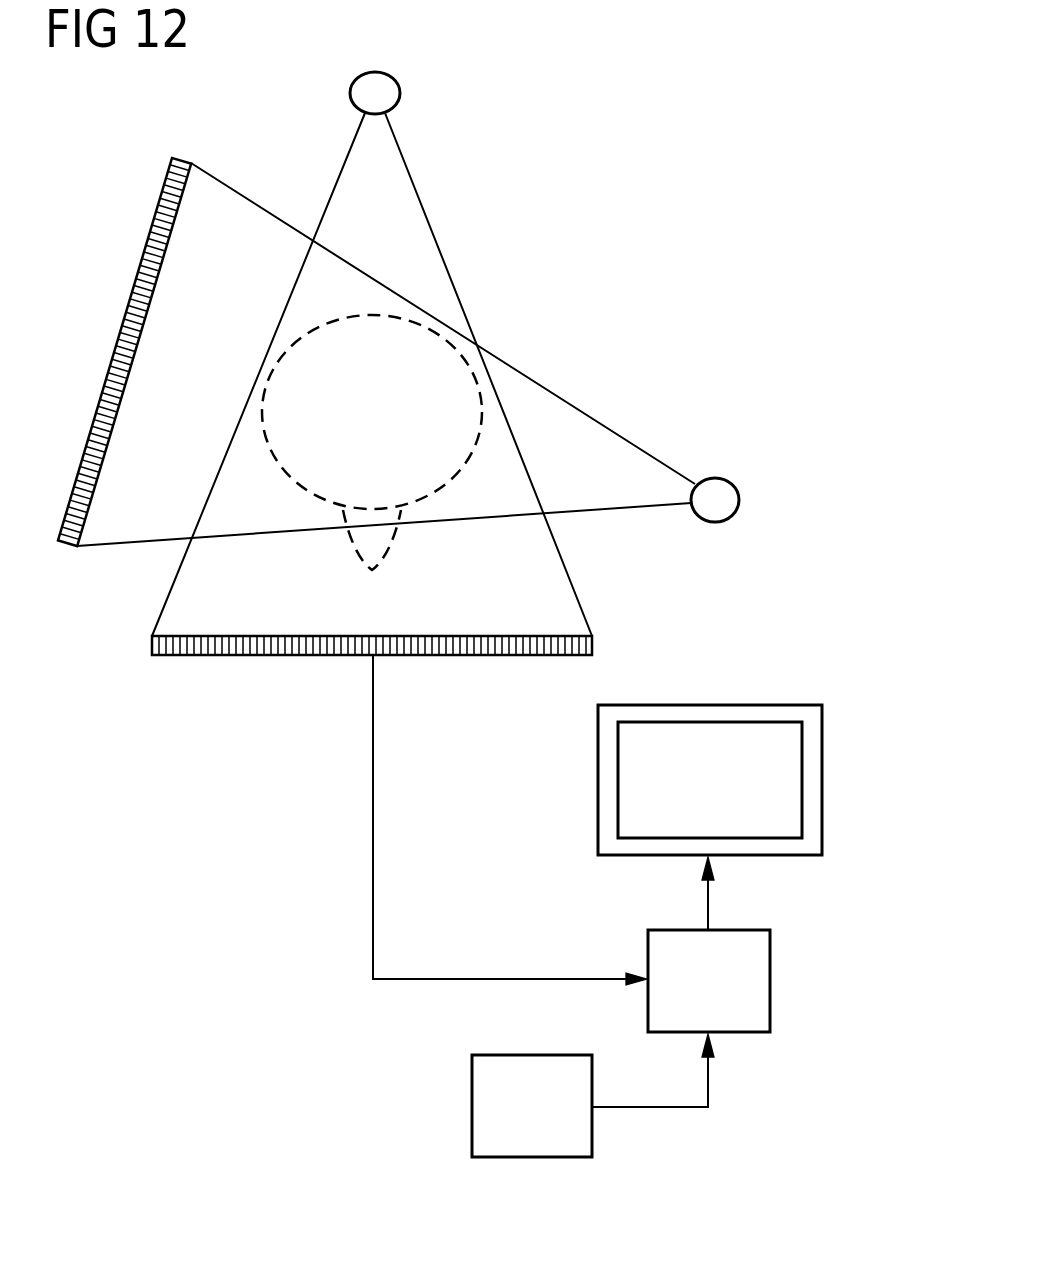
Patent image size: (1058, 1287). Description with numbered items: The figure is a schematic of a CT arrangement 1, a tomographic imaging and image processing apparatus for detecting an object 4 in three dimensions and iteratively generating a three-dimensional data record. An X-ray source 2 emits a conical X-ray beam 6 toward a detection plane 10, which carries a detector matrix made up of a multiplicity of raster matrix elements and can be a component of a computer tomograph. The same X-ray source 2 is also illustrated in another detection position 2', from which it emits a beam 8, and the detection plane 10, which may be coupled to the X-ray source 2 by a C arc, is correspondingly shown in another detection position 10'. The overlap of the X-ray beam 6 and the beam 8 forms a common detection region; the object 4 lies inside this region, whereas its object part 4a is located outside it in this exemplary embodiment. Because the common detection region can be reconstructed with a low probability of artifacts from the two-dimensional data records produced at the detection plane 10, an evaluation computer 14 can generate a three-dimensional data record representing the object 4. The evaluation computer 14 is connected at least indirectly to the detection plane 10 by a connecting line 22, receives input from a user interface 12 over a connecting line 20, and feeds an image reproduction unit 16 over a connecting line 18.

The CT arrangement 1 is at (740, 150).
The X-ray source 2 is at (409, 94).
The detection position of the X-ray source 2' is at (752, 503).
The object 4 is at (300, 465).
The object part 4a is at (378, 545).
The X-ray beam 6 is at (413, 208).
The beam 8 is at (594, 436).
The detection plane 10 is at (372, 682).
The detection position of the detection plane 10' is at (112, 352).
The user interface 12 is at (471, 1107).
The evaluation computer 14 is at (772, 978).
The image reproduction unit 16 is at (823, 780).
The connecting line 18 is at (710, 897).
The connecting line 20 is at (710, 1082).
The connecting line 22 is at (375, 818).